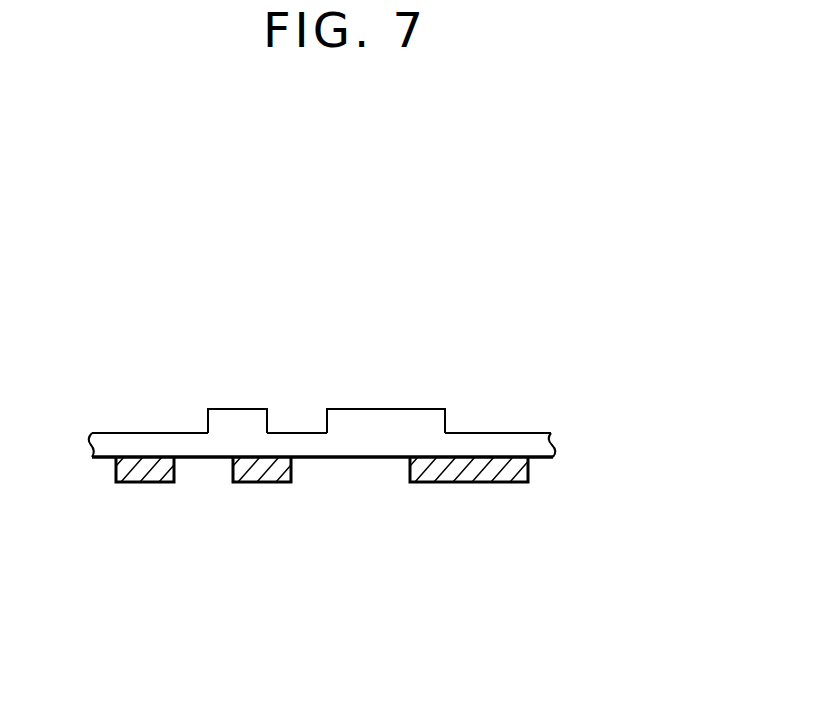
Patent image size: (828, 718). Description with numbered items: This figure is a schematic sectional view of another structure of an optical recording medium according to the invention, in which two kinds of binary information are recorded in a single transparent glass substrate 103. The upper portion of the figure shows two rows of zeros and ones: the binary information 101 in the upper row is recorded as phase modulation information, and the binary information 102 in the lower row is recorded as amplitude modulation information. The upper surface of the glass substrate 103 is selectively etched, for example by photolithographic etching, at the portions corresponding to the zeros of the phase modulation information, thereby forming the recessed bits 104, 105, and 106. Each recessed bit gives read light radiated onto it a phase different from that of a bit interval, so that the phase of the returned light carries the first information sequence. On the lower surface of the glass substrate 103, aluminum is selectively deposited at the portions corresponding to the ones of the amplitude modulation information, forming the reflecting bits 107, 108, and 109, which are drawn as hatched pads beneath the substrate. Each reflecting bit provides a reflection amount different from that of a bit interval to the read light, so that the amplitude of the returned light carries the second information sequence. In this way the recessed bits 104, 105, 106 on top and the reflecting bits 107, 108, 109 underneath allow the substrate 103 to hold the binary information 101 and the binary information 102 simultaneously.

The binary information 101 is at (526, 187).
The binary information 102 is at (531, 248).
The transparent glass substrate 103 is at (557, 442).
The recessed bit 104 is at (145, 420).
The recessed bit 105 is at (310, 413).
The recessed bit 106 is at (492, 428).
The reflecting bit 107 is at (162, 483).
The reflecting bit 108 is at (277, 483).
The reflecting bit 109 is at (485, 483).